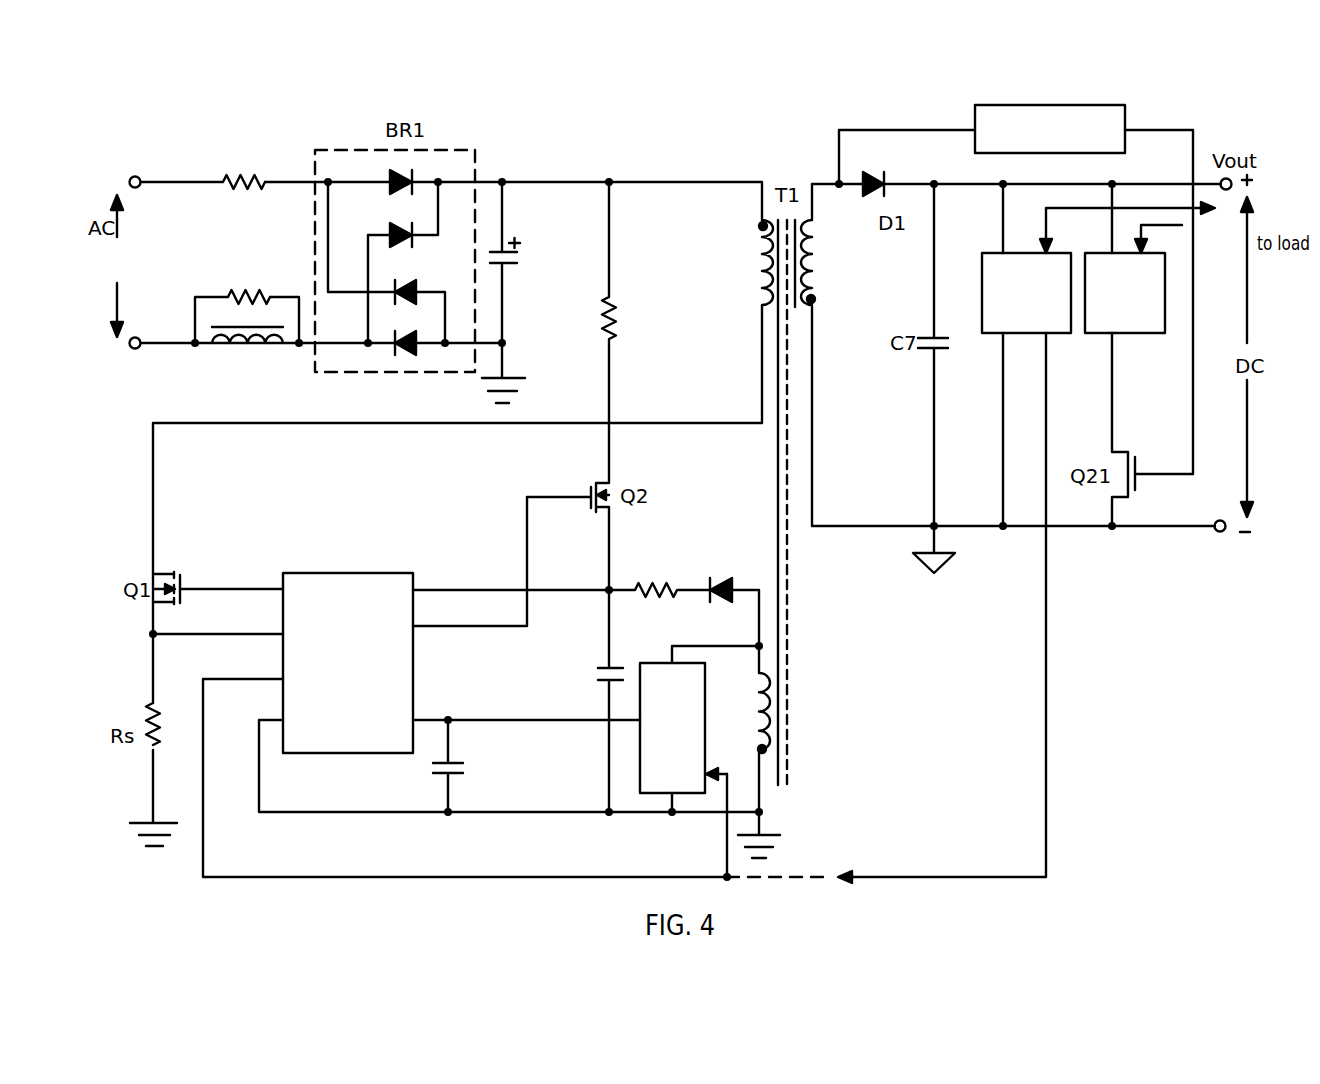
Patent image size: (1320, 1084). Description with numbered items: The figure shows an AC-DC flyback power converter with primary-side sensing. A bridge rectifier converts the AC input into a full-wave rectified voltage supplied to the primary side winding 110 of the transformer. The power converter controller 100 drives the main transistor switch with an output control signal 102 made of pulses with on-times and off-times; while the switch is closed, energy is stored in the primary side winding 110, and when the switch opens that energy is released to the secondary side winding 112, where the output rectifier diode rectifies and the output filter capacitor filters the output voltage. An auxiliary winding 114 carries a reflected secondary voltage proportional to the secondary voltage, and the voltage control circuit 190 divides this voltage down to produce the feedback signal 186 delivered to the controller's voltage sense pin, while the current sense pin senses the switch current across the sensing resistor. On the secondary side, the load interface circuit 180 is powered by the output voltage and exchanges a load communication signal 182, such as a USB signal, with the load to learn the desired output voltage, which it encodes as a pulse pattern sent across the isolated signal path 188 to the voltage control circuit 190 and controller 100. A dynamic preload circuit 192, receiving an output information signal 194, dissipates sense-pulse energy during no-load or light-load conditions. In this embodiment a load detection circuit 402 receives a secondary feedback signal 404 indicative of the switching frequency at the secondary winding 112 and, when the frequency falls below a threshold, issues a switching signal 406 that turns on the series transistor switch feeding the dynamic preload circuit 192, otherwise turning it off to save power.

The power converter controller 100 is at (357, 573).
The output control signal 102 is at (226, 590).
The primary side winding 110 is at (754, 268).
The secondary side winding 112 is at (823, 272).
The auxiliary winding NBIAS 114 is at (790, 713).
The load interface circuit 180 is at (1026, 355).
The load communication signal 182 is at (1127, 227).
The feedback signal 186 is at (526, 706).
The signal path 188 is at (942, 608).
The voltage control circuit 190 is at (672, 737).
The dynamic preload circuit 192 is at (1125, 258).
The output information signal 194 is at (1162, 239).
The load detection circuit 402 is at (1050, 129).
The secondary feedback signal 404 is at (907, 143).
The switching signal 406 is at (1159, 302).